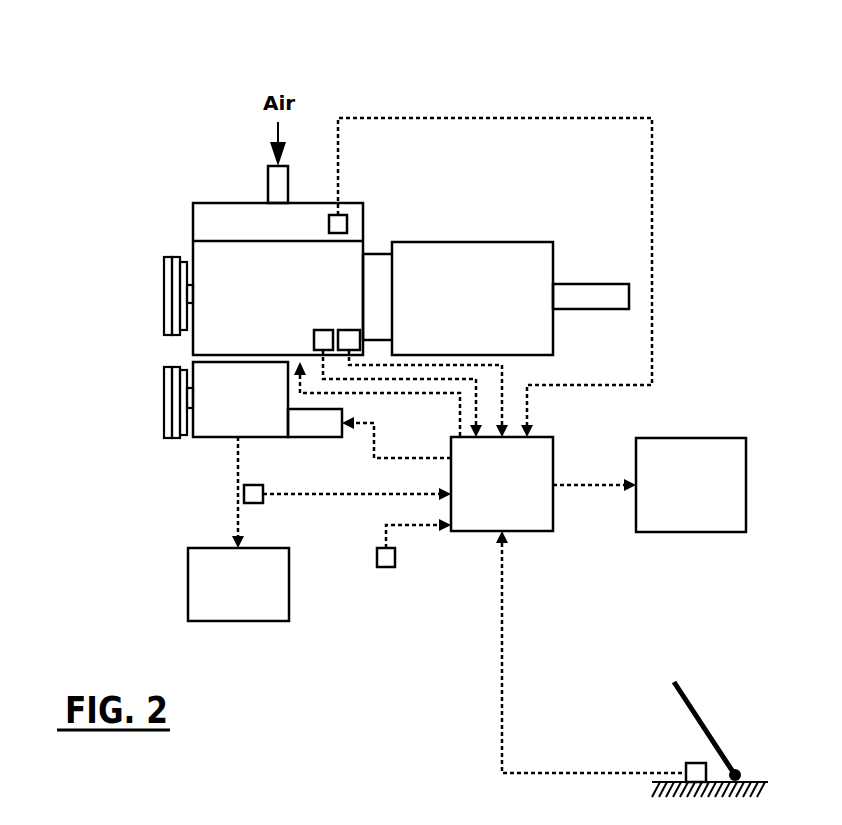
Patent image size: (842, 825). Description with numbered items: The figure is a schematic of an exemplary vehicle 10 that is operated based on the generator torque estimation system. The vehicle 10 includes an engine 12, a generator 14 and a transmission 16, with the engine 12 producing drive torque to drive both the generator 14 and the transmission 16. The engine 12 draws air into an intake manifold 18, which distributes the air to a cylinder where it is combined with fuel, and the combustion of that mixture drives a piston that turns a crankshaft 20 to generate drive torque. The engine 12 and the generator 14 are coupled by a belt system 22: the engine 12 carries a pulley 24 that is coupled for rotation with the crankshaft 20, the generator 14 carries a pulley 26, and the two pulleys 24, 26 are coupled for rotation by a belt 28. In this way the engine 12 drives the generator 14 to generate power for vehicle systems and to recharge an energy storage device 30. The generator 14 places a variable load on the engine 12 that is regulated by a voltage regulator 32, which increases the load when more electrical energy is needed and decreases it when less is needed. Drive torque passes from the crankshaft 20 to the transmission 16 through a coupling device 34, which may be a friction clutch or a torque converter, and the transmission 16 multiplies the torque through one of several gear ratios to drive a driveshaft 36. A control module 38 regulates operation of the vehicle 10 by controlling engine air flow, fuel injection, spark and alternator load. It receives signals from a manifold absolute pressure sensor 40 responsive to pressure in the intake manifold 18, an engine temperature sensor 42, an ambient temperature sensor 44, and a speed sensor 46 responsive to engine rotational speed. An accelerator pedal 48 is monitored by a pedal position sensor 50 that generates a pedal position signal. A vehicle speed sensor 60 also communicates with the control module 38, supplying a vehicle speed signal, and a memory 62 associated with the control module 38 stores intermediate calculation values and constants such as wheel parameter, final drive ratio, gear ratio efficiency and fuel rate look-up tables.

The vehicle 10 is at (710, 128).
The engine 12 is at (372, 252).
The generator 14 is at (198, 438).
The transmission 16 is at (483, 242).
The intake manifold 18 is at (218, 203).
The crankshaft 20 is at (183, 262).
The belt system 22 is at (92, 298).
The pulley 24 is at (164, 290).
The pulley 26 is at (164, 396).
The belt 28 is at (174, 257).
The energy storage device 30 is at (188, 568).
The voltage regulator 32 is at (290, 437).
The coupling device 34 is at (378, 252).
The driveshaft 36 is at (590, 284).
The control module 38 is at (547, 437).
The manifold absolute pressure sensor 40 is at (326, 215).
The engine temperature sensor 42 is at (314, 340).
The ambient temperature sensor 44 is at (389, 567).
The speed sensor 46 is at (340, 330).
The accelerator pedal 48 is at (688, 697).
The pedal position sensor 50 is at (692, 763).
The vehicle speed sensor 60 is at (253, 503).
The memory 62 is at (695, 438).